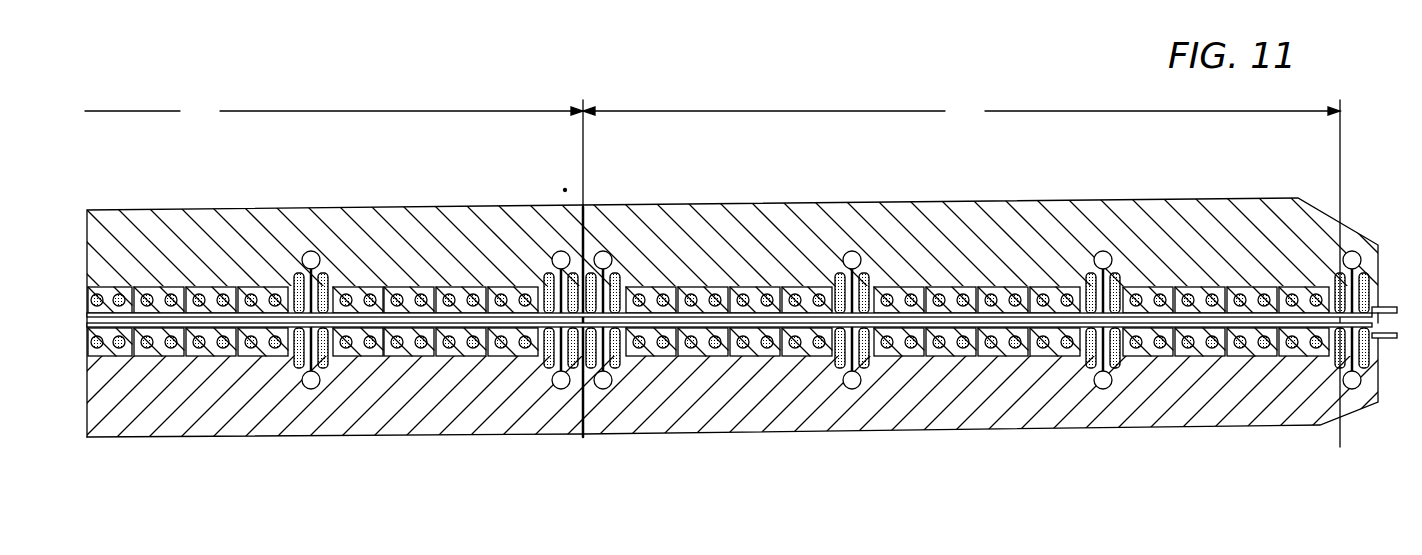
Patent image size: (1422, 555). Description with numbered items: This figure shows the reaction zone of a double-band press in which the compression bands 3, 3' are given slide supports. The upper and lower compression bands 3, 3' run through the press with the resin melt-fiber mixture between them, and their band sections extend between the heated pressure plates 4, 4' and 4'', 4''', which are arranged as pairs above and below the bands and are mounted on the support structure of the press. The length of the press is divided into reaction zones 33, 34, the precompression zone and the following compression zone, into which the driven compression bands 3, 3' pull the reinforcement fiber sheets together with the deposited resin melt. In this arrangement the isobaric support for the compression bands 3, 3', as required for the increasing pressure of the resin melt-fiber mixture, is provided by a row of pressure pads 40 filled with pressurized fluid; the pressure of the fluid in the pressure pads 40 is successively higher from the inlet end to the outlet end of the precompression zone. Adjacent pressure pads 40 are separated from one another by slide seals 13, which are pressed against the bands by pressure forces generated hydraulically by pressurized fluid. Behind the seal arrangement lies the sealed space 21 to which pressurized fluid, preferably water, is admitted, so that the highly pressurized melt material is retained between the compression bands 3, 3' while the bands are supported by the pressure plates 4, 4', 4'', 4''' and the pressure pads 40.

The compression band 3 is at (729, 249).
The compression band 3' is at (756, 386).
The heated pressure plate 4 is at (715, 302).
The heated pressure plate 4' is at (720, 414).
The heated pressure plate 4'' is at (715, 238).
The heated pressure plate 4''' is at (720, 398).
The slide seal structure 13 is at (324, 276).
The sealed space 21 is at (142, 288).
The reaction zone 33 is at (961, 273).
The reaction zone 34 is at (334, 153).
The pressure pad 40 is at (1303, 284).